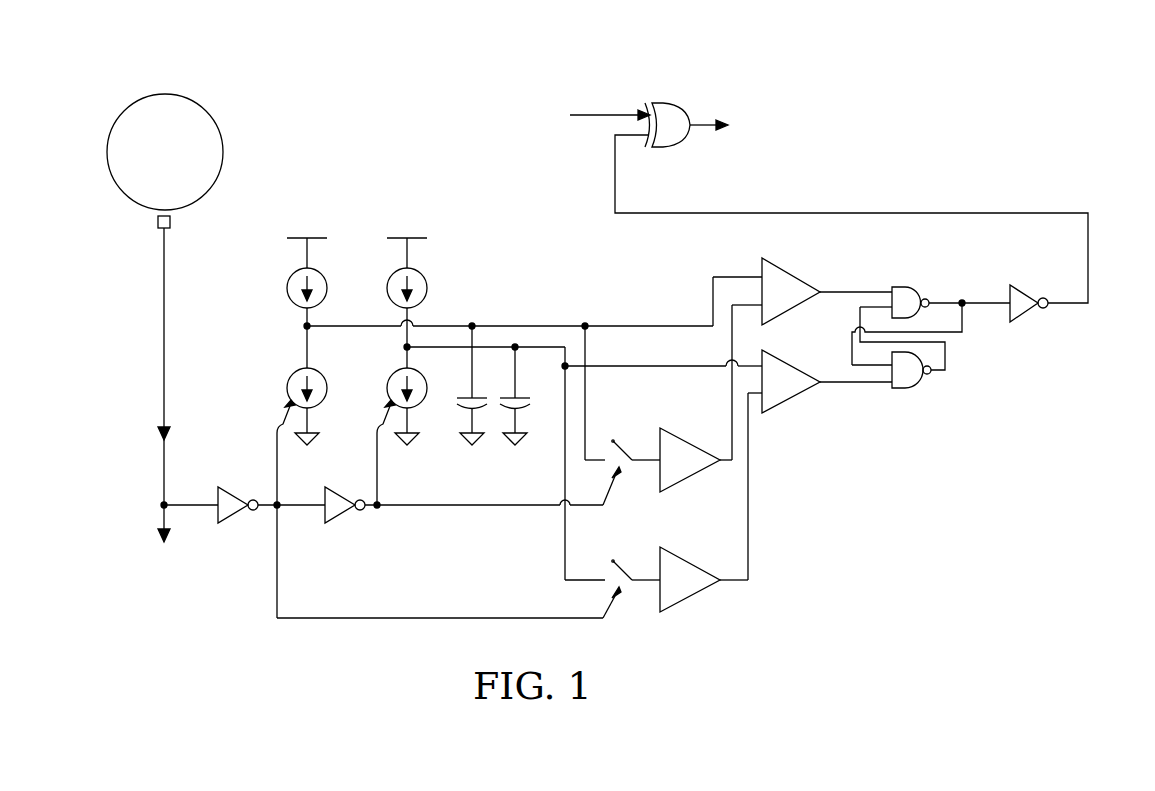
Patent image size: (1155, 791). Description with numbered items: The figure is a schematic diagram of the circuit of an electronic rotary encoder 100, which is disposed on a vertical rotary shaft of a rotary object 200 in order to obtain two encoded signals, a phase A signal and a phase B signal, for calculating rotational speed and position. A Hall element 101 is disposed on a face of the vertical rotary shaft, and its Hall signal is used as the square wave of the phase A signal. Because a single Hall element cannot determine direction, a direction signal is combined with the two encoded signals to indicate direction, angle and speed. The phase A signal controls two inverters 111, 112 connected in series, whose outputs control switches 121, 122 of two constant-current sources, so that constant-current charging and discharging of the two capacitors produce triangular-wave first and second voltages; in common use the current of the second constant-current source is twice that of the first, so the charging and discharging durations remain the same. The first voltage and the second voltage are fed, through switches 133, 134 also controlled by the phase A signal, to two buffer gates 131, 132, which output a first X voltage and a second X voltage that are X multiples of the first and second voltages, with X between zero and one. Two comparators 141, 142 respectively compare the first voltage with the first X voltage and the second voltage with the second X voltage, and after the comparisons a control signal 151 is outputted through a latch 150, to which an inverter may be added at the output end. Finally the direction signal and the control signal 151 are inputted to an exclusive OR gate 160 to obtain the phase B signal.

The electronic rotary encoder 100 is at (434, 40).
The Hall element 101 is at (153, 222).
The inverter 111 is at (233, 513).
The inverter 112 is at (343, 513).
The switch 121 is at (277, 420).
The switch 122 is at (377, 420).
The buffer gate 131 is at (678, 477).
The buffer gate 132 is at (678, 597).
The switch 133 is at (629, 444).
The switch 134 is at (629, 564).
The comparator 141 is at (777, 270).
The comparator 142 is at (777, 360).
The latch 150 is at (990, 377).
The control signal 151 is at (931, 213).
The exclusive OR gate 160 is at (677, 107).
The rotary object 200 is at (123, 142).